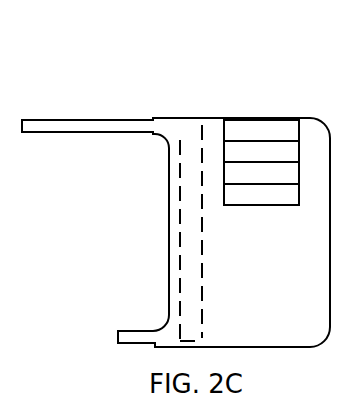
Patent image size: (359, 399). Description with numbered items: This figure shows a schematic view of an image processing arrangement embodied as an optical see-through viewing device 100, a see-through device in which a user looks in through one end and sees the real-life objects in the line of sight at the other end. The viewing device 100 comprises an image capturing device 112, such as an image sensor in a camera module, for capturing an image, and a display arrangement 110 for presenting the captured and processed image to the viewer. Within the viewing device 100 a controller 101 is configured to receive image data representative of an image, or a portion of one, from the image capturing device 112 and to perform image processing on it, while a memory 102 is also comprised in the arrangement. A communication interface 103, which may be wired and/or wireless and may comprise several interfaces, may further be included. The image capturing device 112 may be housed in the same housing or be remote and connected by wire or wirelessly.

The viewing device 100 is at (127, 78).
The display arrangement 110 is at (183, 124).
The controller 101 is at (261, 131).
The memory 102 is at (261, 152).
The communication interface 103 is at (261, 174).
The image capturing device 112 is at (261, 195).